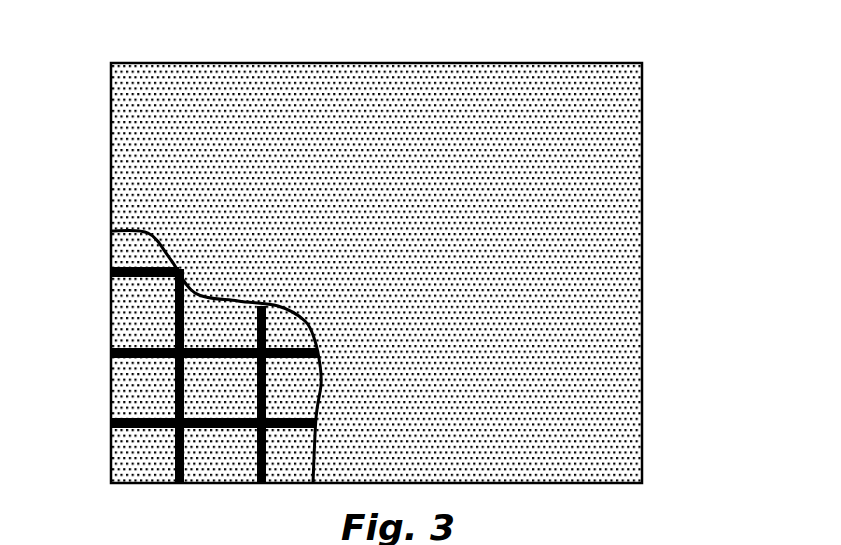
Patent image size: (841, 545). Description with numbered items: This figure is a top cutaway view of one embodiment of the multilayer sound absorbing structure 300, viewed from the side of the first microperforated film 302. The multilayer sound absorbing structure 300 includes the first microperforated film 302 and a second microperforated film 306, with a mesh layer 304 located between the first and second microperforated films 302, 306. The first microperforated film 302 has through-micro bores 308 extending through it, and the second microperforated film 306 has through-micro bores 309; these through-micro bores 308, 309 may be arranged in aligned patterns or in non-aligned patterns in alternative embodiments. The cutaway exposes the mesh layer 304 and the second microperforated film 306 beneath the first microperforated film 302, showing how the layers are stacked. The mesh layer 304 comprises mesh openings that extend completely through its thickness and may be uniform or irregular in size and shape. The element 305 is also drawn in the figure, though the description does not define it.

The display image / screen 300 is at (649, 52).
The background region 302 is at (624, 148).
The vertical grid line 304 is at (167, 447).
The horizontal grid line 305 is at (219, 390).
The boundary of grid region 306 is at (102, 304).
The dot pattern pixels 308 is at (604, 320).
The grid cells 309 is at (121, 381).